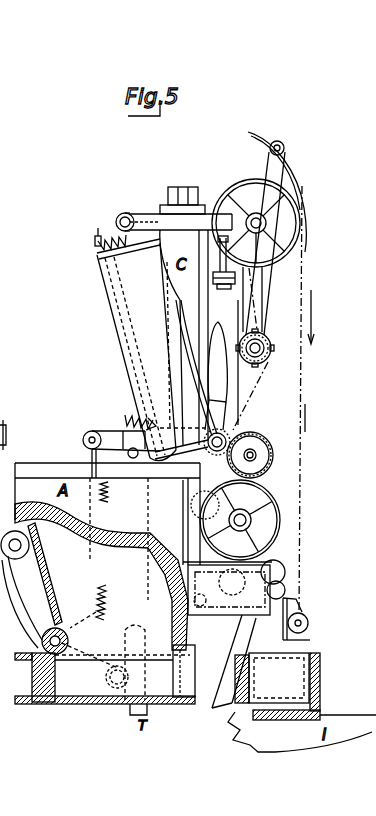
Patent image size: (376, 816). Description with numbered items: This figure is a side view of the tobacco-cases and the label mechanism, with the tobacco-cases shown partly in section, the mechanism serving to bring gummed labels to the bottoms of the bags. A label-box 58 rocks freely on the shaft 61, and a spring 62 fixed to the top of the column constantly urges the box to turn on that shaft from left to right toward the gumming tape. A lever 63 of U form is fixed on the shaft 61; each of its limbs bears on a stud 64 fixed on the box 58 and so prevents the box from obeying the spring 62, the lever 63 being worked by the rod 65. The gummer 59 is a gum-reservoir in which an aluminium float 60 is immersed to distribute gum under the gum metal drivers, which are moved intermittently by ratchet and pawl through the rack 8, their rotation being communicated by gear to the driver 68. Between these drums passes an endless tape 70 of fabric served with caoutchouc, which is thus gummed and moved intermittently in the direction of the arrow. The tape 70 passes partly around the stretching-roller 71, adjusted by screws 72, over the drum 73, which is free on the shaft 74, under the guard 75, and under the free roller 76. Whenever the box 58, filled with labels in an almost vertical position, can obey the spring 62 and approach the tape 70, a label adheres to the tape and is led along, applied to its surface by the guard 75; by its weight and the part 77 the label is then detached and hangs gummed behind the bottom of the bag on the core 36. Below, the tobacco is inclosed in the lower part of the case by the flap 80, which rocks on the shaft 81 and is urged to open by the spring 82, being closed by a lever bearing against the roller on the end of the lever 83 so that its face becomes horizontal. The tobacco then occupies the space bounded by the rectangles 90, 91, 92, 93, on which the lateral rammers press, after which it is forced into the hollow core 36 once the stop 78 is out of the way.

The rack 8 is at (234, 661).
The core 36 is at (284, 686).
The label-box 58 is at (151, 350).
The gummer 59 is at (278, 574).
The float 60 is at (229, 590).
The shaft 61 is at (222, 436).
The spring 62 is at (128, 415).
The lever 63 is at (107, 437).
The stud 64 is at (128, 455).
The rod 65 is at (90, 455).
The driver 68 is at (272, 459).
The endless tape 70 is at (305, 413).
The stretching-roller 71 is at (252, 338).
The screw 72 is at (232, 284).
The drum 73 is at (272, 263).
The shaft 74 is at (268, 223).
The guard 75 is at (298, 190).
The free roller 76 is at (309, 623).
The part 77 is at (304, 640).
The stop 78 is at (200, 695).
The flap 80 is at (46, 566).
The shaft 81 is at (48, 641).
The spring 82 is at (100, 555).
The lever 83 is at (104, 680).
The rectangle 90 is at (60, 705).
The rectangle 91 is at (170, 705).
The rectangle 92 is at (172, 652).
The rectangle 93 is at (86, 660).